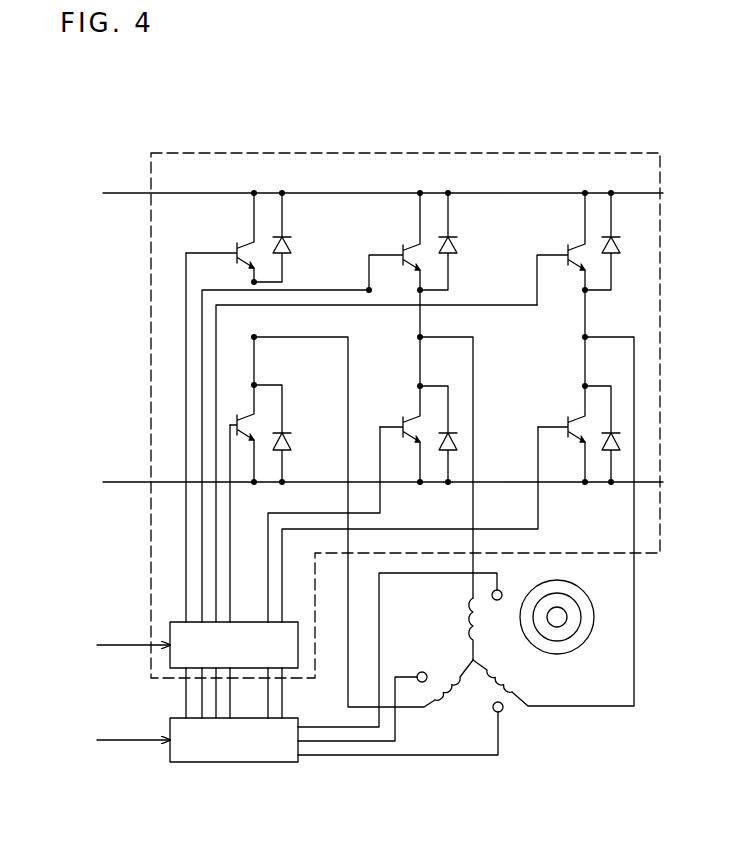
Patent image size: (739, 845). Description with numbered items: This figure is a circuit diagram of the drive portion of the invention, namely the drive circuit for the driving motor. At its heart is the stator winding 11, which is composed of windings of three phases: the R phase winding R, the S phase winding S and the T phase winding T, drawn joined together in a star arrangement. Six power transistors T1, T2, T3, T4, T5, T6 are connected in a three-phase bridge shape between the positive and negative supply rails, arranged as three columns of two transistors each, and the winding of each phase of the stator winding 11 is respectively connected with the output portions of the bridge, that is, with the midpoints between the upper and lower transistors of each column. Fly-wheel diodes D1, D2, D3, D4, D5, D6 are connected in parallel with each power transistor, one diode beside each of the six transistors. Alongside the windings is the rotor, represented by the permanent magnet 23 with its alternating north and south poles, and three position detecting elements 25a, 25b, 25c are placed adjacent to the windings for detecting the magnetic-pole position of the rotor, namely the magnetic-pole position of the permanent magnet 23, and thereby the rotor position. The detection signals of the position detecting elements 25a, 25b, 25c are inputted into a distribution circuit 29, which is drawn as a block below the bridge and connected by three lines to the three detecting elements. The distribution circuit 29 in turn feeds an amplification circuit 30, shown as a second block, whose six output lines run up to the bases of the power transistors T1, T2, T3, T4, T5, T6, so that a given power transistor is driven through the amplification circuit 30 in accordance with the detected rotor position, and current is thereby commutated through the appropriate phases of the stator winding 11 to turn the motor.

The stator winding 11 is at (473, 648).
The permanent magnet 23 is at (590, 605).
The position detecting element 25a is at (502, 590).
The position detecting element 25b is at (422, 672).
The position detecting element 25c is at (505, 712).
The distribution circuit 29 is at (285, 758).
The amplification circuit 30 is at (290, 623).
The power transistor T1 is at (247, 240).
The power transistor T2 is at (578, 413).
The power transistor T3 is at (416, 240).
The power transistor T4 is at (252, 410).
The power transistor T5 is at (580, 240).
The power transistor T6 is at (415, 413).
The fly-wheel diode D1 is at (294, 242).
The fly-wheel diode D2 is at (615, 431).
The fly-wheel diode D3 is at (458, 243).
The fly-wheel diode D4 is at (293, 443).
The fly-wheel diode D5 is at (622, 243).
The fly-wheel diode D6 is at (455, 431).
The S phase winding S is at (463, 620).
The T phase winding T is at (510, 678).
The R phase winding R is at (450, 690).